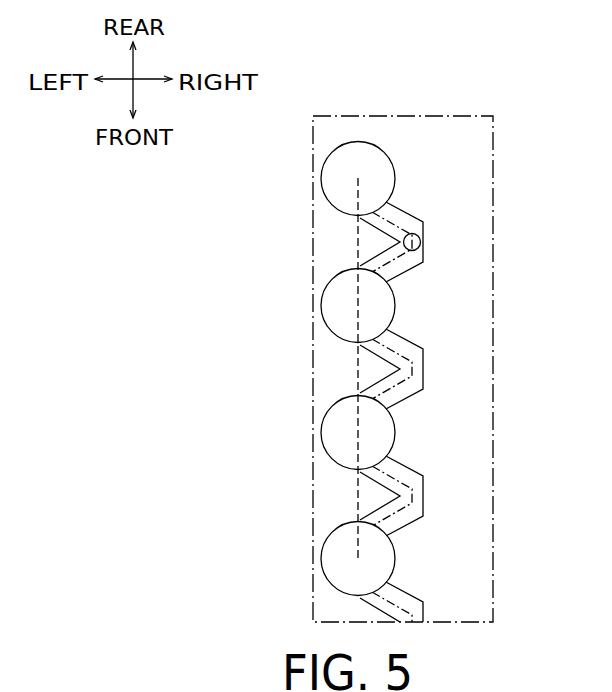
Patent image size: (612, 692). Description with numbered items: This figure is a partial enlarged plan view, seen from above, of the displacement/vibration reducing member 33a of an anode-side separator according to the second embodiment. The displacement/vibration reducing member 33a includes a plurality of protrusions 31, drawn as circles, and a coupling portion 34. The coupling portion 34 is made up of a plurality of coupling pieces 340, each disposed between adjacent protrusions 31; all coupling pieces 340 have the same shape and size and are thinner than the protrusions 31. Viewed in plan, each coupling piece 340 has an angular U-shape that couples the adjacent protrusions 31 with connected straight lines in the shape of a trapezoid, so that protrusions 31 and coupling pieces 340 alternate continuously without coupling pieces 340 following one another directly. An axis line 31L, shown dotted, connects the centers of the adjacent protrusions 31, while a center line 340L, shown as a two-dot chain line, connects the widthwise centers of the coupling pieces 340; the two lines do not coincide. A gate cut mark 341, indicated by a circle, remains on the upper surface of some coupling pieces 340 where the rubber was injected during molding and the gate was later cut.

The displacement/vibration reducing member 33a is at (375, 389).
The protrusion 31 is at (342, 304).
The coupling portion 34 is at (413, 432).
The coupling piece 340 is at (410, 276).
The gate cut mark 341 is at (413, 233).
The axis line 31L is at (357, 498).
The center line 340L is at (413, 495).